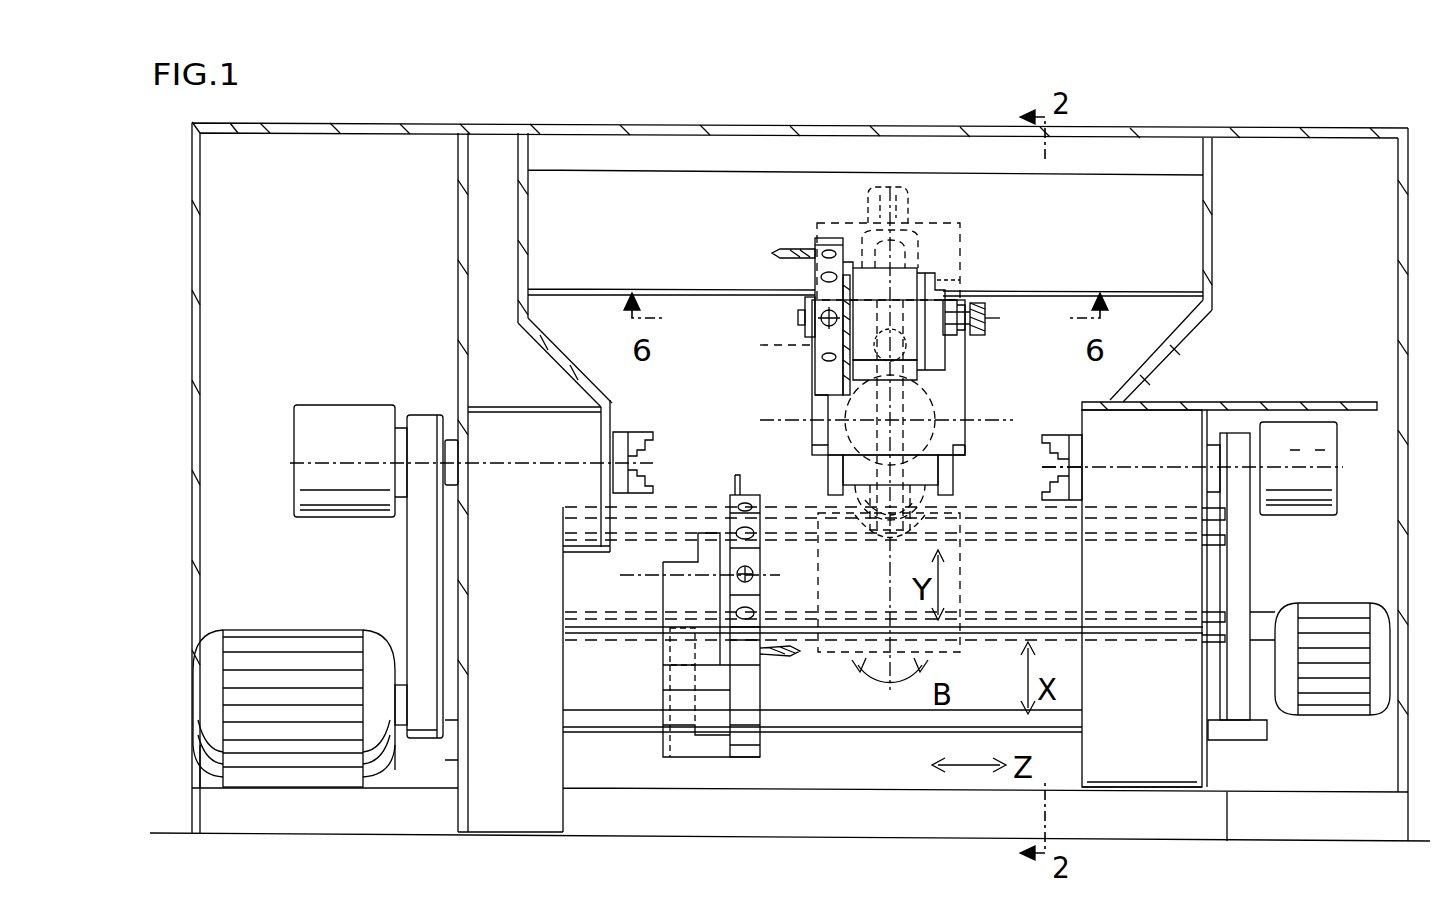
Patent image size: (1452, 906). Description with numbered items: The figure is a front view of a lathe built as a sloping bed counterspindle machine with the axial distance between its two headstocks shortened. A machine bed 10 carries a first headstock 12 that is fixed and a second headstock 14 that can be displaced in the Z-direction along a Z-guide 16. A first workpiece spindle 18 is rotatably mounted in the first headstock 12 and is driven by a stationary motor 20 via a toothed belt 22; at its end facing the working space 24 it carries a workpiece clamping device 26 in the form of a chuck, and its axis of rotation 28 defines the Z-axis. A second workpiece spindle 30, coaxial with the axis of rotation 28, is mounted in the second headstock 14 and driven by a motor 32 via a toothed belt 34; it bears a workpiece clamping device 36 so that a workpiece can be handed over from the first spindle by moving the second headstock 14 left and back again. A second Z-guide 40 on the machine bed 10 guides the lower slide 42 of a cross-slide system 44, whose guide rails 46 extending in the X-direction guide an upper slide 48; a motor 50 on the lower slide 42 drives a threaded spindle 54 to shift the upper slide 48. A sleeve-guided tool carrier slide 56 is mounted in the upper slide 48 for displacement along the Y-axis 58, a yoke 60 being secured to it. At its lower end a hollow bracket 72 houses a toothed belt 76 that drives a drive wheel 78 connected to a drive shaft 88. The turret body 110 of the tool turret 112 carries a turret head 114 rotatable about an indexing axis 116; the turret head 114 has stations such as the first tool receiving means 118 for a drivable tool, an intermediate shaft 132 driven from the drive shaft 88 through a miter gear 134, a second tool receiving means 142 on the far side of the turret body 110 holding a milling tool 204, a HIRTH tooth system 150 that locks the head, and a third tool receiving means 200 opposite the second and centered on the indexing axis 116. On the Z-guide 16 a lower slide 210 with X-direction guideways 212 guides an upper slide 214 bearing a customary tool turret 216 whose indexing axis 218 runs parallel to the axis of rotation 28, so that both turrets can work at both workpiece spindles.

The machine bed 10 is at (887, 758).
The first headstock 12 is at (486, 769).
The second headstock 14 is at (1168, 756).
The Z-guide 16 is at (823, 738).
The first workpiece spindle 18 is at (440, 455).
The motor 20 is at (310, 645).
The toothed belt 22 is at (423, 570).
The working space 24 is at (1146, 203).
The workpiece clamping device 26 is at (632, 432).
The axis of rotation 28 is at (350, 463).
The second workpiece spindle 30 is at (1212, 448).
The motor 32 is at (1317, 608).
The toothed belt 34 is at (1247, 577).
The workpiece clamping device 36 is at (1065, 405).
The second Z-guide 40 is at (1062, 522).
The lower slide 42 is at (790, 478).
The cross-slide system 44 is at (969, 457).
The guide rails 46 is at (819, 488).
The upper slide 48 is at (809, 430).
The motor 50 is at (893, 187).
The threaded spindle 54 is at (891, 322).
The tool carrier slide 56 is at (924, 397).
The Y-axis 58 is at (860, 405).
The yoke 60 is at (919, 496).
The hollow bracket 72 is at (860, 545).
The toothed belt 76 is at (960, 540).
The drive wheel 78 is at (960, 520).
The drive shaft 88 is at (985, 410).
The turret body 110 is at (922, 270).
The tool turret 112 is at (807, 230).
The turret head 114 is at (805, 253).
The indexing axis 116 is at (1008, 322).
The first tool receiving means 118 is at (851, 262).
The intermediate shaft 132 is at (820, 345).
The miter gear 134 is at (950, 262).
The second tool receiving means 142 is at (978, 298).
The HIRTH tooth system 150 is at (848, 275).
The third tool receiving means 200 is at (794, 313).
The milling tool 204 is at (986, 318).
The lower slide 210 is at (715, 740).
The guideways 212 is at (668, 735).
The upper slide 214 is at (665, 692).
The tool turret 216 is at (714, 678).
The indexing axis 218 is at (627, 573).